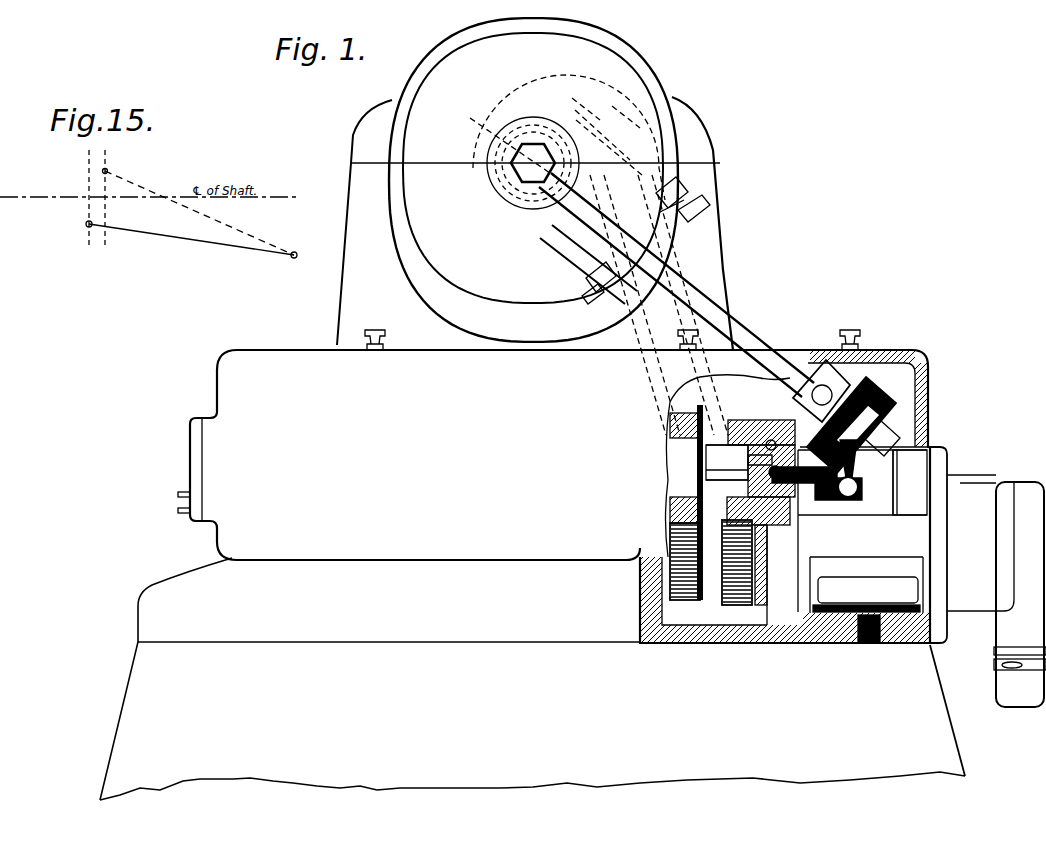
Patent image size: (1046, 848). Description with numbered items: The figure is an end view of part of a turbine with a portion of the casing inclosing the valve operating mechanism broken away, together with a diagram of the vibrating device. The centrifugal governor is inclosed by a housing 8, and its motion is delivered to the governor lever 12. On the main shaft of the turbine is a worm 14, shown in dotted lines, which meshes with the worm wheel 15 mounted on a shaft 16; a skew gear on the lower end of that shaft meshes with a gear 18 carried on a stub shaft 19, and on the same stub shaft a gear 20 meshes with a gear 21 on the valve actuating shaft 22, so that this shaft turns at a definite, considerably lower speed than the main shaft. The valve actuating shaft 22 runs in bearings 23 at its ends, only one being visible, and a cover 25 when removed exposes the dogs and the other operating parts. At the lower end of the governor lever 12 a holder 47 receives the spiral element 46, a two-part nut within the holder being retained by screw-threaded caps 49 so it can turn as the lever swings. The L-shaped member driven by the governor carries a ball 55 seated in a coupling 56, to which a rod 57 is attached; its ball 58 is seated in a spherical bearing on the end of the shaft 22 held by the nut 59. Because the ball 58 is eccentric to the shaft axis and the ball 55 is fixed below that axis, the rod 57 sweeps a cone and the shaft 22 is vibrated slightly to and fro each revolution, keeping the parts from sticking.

In FIG. 1, the housing 8 is at (533, 180).
In FIG. 1, the governor lever 12 is at (745, 332).
In FIG. 1, the worm 14 is at (521, 126).
In FIG. 1, the worm wheel 15 is at (668, 108).
In FIG. 1, the shaft 16 is at (676, 373).
In FIG. 1, the gear 18 is at (737, 606).
In FIG. 1, the stub shaft 19 is at (666, 540).
In FIG. 1, the gear 20 is at (685, 600).
In FIG. 1, the gear 21 is at (670, 427).
In FIG. 1, the valve actuating shaft 22 is at (675, 470).
In FIG. 1, the bearings 23 is at (752, 425).
In FIG. 1, the cover 25 is at (929, 398).
In FIG. 1, the spiral element 46 is at (870, 400).
In FIG. 1, the holder 47 is at (824, 372).
In FIG. 1, the screw-threaded caps 49 is at (868, 392).
In FIG. 15, the ball 55 is at (292, 259).
In FIG. 1, the ball 55 is at (857, 500).
In FIG. 1, the coupling 56 is at (860, 488).
In FIG. 15, the rod 57 is at (260, 242).
In FIG. 1, the rod 57 is at (806, 486).
In FIG. 15, the ball 58 is at (108, 170).
In FIG. 1, the ball 58 is at (772, 440).
In FIG. 1, the nut 59 is at (790, 462).